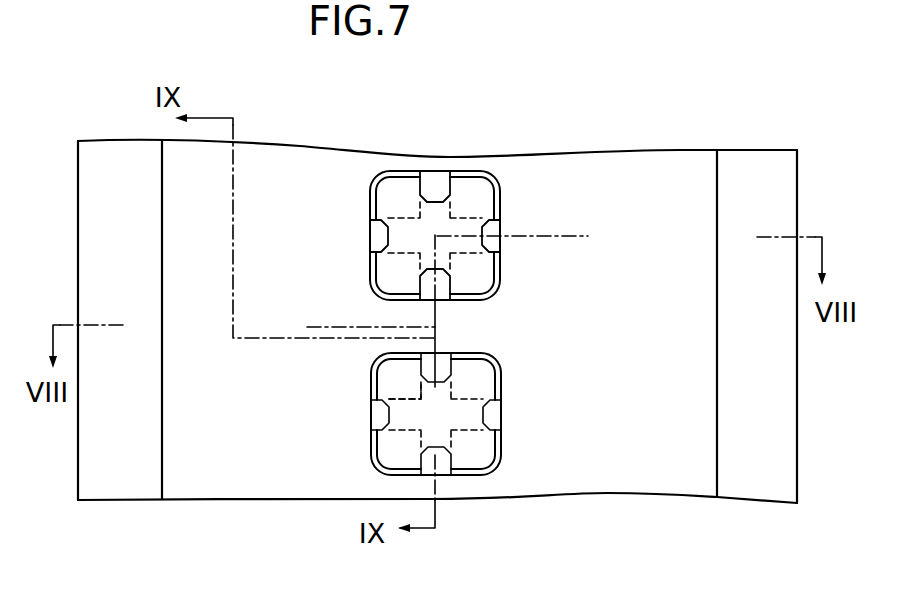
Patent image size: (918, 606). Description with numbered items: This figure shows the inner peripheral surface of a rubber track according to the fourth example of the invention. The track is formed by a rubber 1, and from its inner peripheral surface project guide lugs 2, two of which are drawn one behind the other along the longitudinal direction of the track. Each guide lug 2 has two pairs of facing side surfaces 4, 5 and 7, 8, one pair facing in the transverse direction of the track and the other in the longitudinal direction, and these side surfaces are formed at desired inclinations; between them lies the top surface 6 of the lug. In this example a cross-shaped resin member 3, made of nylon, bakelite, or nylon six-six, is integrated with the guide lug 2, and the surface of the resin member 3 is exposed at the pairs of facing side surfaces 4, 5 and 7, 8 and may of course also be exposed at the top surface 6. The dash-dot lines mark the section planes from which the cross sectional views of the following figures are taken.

The rubber 1 is at (680, 162).
The guide lug 2 is at (503, 165).
The cross-shaped resin member 3 is at (405, 398).
The side surface 4 is at (380, 268).
The side surface 5 is at (491, 209).
The top surface 6 is at (425, 228).
The side surface 7 is at (398, 187).
The side surface 8 is at (477, 267).